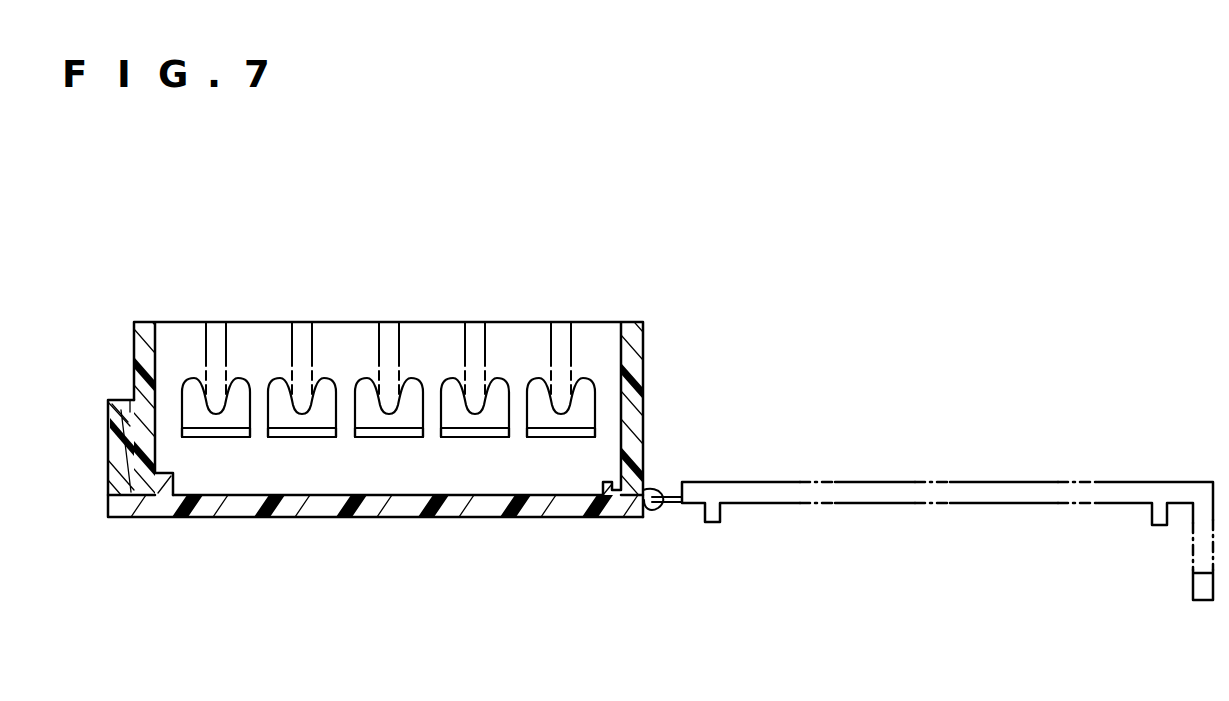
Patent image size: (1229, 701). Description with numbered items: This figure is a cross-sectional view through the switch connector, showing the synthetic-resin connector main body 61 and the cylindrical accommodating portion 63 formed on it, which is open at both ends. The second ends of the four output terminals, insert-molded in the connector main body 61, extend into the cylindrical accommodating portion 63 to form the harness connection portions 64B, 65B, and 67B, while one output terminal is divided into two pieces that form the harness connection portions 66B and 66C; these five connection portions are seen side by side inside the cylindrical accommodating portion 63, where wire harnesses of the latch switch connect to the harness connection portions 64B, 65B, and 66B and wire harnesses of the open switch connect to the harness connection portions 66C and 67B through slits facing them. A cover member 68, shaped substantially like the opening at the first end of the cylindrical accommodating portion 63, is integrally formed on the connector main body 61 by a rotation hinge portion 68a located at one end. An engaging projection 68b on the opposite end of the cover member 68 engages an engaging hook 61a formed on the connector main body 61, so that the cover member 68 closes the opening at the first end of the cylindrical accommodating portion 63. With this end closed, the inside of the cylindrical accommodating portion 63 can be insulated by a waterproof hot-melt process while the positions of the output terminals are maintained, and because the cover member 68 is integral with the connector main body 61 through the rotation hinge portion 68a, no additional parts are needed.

The connector main body 61 is at (650, 366).
The engaging hook 61a is at (124, 440).
The cylindrical accommodating portion 63 is at (622, 357).
The harness connection portion 64B is at (218, 437).
The harness connection portion 65B is at (303, 437).
The harness connection portion 66B is at (388, 437).
The harness connection portion 66C is at (484, 438).
The harness connection portion 67B is at (565, 438).
The cover member 68 is at (447, 508).
The rotation hinge portion 68a is at (650, 490).
The engaging projection 68b is at (110, 402).